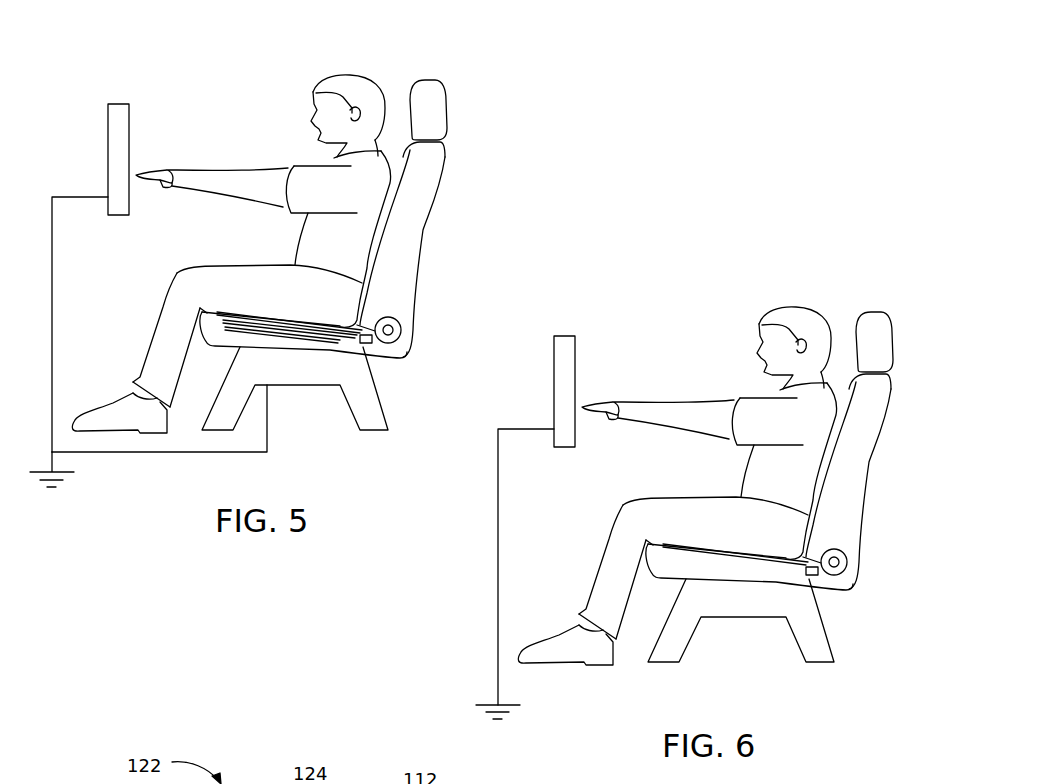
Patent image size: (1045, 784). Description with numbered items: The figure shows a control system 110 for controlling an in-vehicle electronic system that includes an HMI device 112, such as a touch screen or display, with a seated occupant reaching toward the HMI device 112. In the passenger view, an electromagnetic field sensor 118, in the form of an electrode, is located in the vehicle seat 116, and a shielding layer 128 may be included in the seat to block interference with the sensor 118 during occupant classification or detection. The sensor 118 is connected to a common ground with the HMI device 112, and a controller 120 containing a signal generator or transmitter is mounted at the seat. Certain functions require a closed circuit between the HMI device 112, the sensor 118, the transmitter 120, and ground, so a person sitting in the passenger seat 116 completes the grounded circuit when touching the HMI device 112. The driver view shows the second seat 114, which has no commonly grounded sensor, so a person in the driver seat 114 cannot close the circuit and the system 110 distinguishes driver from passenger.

In FIG. 5, the control system 110 is at (266, 251).
In FIG. 5, the HMI device 112 is at (129, 120).
In FIG. 6, the HMI device 112 is at (552, 506).
In FIG. 6, the second seat 114 is at (796, 487).
In FIG. 5, the vehicle seat 116 is at (422, 228).
In FIG. 5, the electromagnetic field sensor 118 is at (293, 330).
In FIG. 5, the controller 120 is at (368, 348).
In FIG. 5, the shielding layer 128 is at (312, 340).